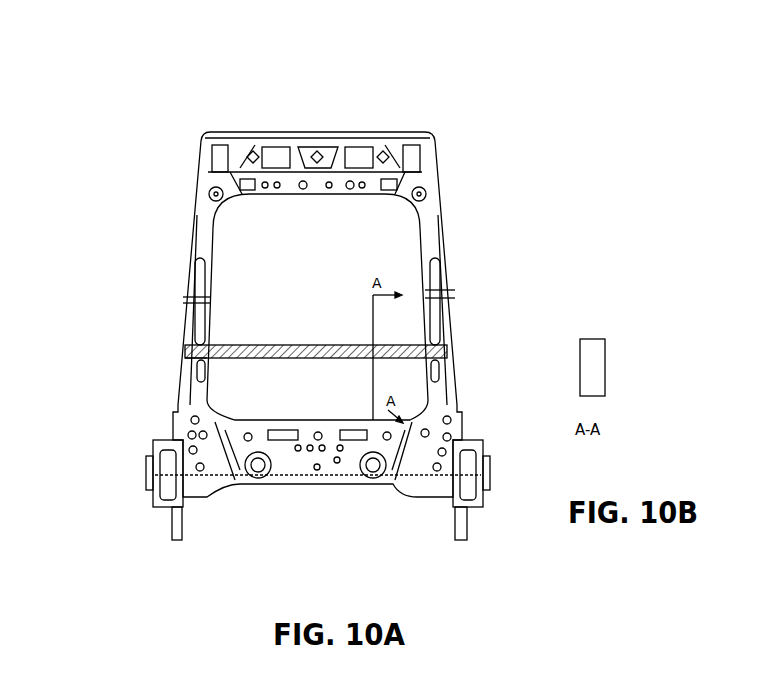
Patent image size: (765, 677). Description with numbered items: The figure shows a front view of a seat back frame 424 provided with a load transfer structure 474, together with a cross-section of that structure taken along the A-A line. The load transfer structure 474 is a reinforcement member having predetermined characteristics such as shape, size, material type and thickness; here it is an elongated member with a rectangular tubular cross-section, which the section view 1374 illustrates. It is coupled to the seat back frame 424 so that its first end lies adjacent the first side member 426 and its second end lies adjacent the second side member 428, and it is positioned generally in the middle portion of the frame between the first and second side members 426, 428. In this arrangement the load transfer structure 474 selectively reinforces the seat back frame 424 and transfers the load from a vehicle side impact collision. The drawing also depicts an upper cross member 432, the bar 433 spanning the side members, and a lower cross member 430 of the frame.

In FIG. 10A, the seat back frame 424 is at (130, 74).
In FIG. 10A, the upper cross member 432 is at (332, 137).
In FIG. 10A, the second side member 428 is at (428, 227).
In FIG. 10A, the first side member 426 is at (197, 286).
In FIG. 10A, the cross bar 433 is at (293, 348).
In FIG. 10A, the load transfer structure 474 is at (198, 366).
In FIG. 10A, the lower cross member 430 is at (295, 458).
In FIG. 10B, the cross bar section 1374 is at (583, 320).